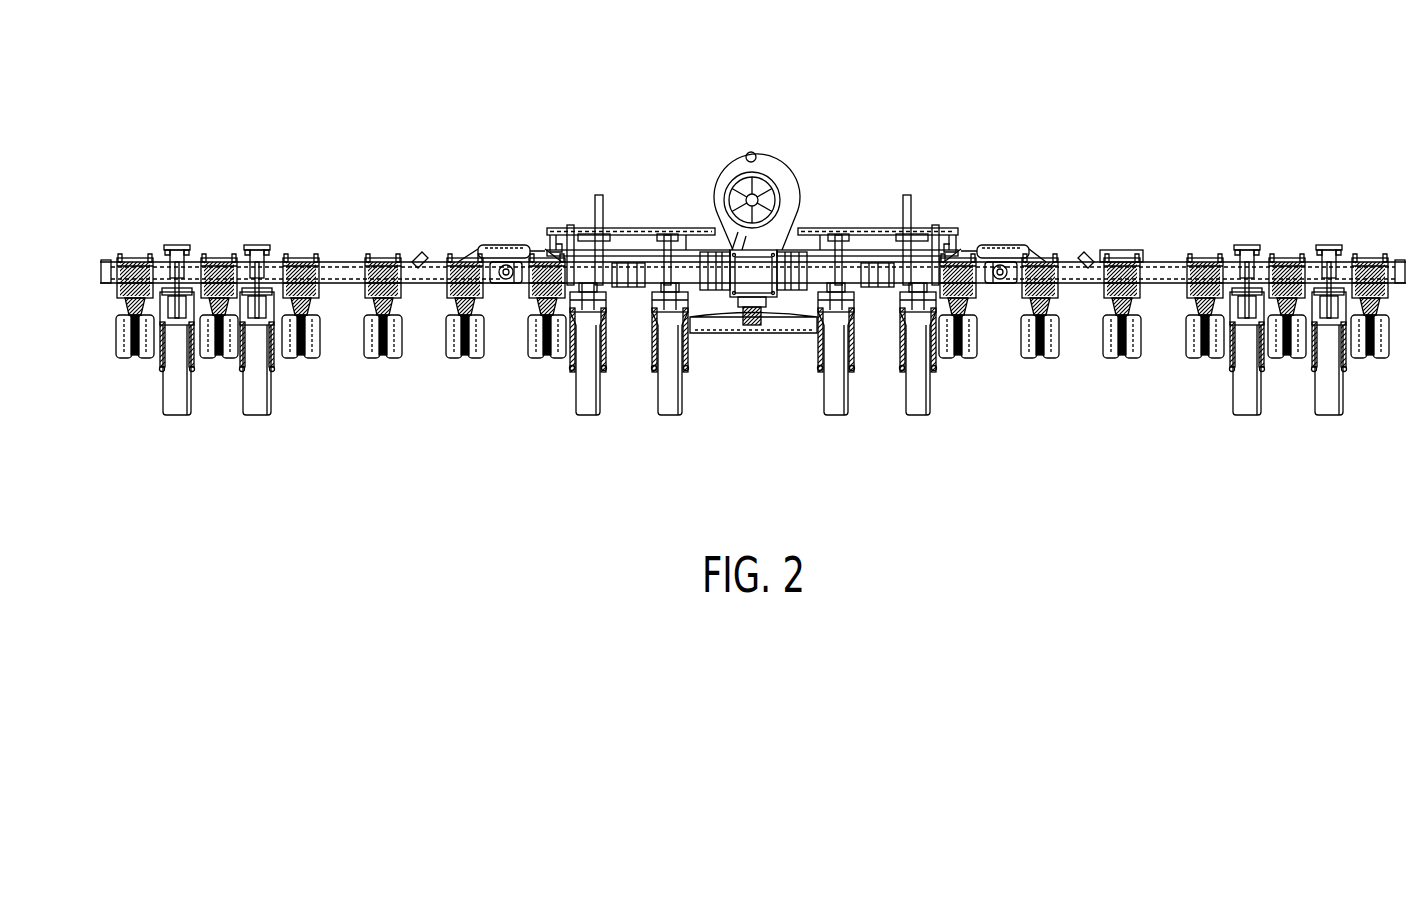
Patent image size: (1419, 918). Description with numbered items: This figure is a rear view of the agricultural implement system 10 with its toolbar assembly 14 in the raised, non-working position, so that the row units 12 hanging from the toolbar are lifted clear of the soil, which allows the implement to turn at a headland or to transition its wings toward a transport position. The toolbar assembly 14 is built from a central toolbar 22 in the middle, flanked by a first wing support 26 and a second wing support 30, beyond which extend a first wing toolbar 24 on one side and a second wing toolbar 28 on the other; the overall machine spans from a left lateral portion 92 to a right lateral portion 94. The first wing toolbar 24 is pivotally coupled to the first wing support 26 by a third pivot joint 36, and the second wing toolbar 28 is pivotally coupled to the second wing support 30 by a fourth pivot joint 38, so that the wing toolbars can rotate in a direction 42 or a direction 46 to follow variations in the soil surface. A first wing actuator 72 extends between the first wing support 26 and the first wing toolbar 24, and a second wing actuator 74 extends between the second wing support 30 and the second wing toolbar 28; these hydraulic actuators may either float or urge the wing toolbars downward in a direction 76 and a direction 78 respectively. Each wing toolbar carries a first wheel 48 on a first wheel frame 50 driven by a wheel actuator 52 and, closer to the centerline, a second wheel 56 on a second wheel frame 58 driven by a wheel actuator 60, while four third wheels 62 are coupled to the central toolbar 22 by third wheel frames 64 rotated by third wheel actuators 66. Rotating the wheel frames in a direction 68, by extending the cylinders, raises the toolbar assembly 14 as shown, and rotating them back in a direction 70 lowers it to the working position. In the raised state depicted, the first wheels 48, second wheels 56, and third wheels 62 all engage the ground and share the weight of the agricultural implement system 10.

The agricultural implement system 10 is at (803, 115).
The row unit 12 is at (136, 378).
The toolbar assembly 14 is at (480, 424).
The central toolbar 22 is at (850, 262).
The first wing toolbar 24 is at (328, 262).
The first wing support 26 is at (519, 276).
The second wing toolbar 28 is at (1178, 262).
The second wing support 30 is at (984, 276).
The third pivot joint 36 is at (505, 280).
The fourth pivot joint 38 is at (1001, 280).
The direction 42 is at (485, 207).
The direction 46 is at (1021, 207).
The first wheel 48 is at (177, 407).
The first wheel frame 50 is at (190, 298).
The wheel actuator 52 is at (168, 275).
The second wheel 56 is at (257, 407).
The second wheel frame 58 is at (276, 298).
The wheel actuator 60 is at (251, 278).
The third wheel 62 is at (588, 418).
The third wheel frame 64 is at (607, 330).
The third wheel actuator 66 is at (672, 262).
The direction 68 is at (752, 362).
The direction 70 is at (752, 132).
The first wing actuator 72 is at (492, 243).
The second wing actuator 74 is at (1013, 243).
The direction 76 is at (523, 147).
The direction 78 is at (983, 147).
The left lateral portion 92 is at (233, 150).
The right lateral portion 94 is at (1273, 150).